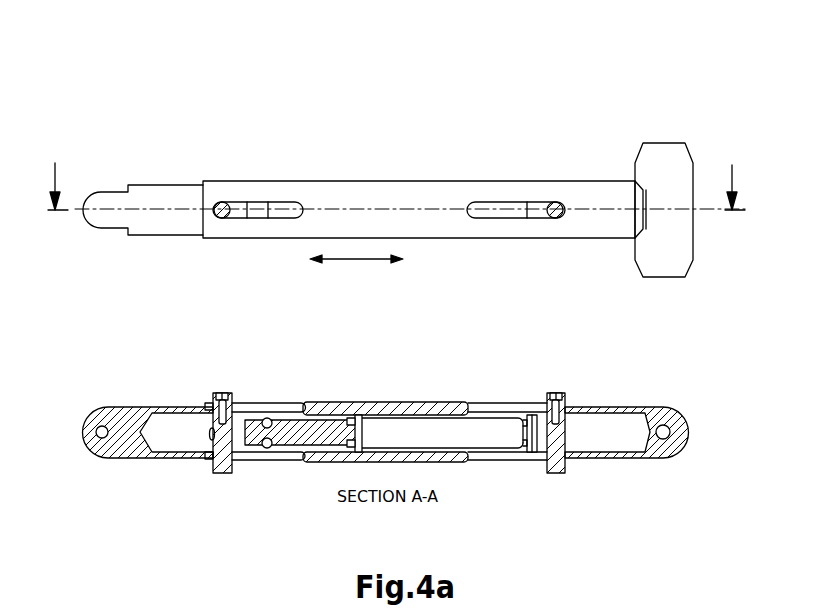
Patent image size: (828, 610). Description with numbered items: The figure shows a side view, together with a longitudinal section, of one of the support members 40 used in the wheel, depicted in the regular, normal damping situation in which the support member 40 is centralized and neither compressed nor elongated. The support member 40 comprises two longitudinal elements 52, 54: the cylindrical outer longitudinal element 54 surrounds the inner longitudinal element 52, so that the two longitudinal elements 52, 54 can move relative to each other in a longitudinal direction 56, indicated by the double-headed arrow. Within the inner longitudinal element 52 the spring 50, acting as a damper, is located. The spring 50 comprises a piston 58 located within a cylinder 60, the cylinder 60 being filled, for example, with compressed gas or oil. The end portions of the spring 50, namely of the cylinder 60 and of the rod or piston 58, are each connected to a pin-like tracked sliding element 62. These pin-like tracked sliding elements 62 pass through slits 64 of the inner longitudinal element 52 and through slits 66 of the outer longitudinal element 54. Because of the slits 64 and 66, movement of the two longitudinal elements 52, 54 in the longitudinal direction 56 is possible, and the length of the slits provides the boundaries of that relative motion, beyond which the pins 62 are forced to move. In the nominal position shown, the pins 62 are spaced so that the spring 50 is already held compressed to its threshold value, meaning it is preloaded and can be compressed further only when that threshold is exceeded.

The support member 40 is at (356, 140).
The spring 50 is at (418, 414).
The inner longitudinal element 52 is at (165, 197).
The outer longitudinal element 54 is at (590, 197).
The longitudinal direction 56 is at (360, 259).
The piston 58 is at (320, 430).
The cylinder 60 is at (441, 462).
The pin-like tracked sliding element 62 is at (205, 458).
The slits of the inner longitudinal element 64 is at (290, 403).
The slits of the outer longitudinal element 66 is at (257, 403).